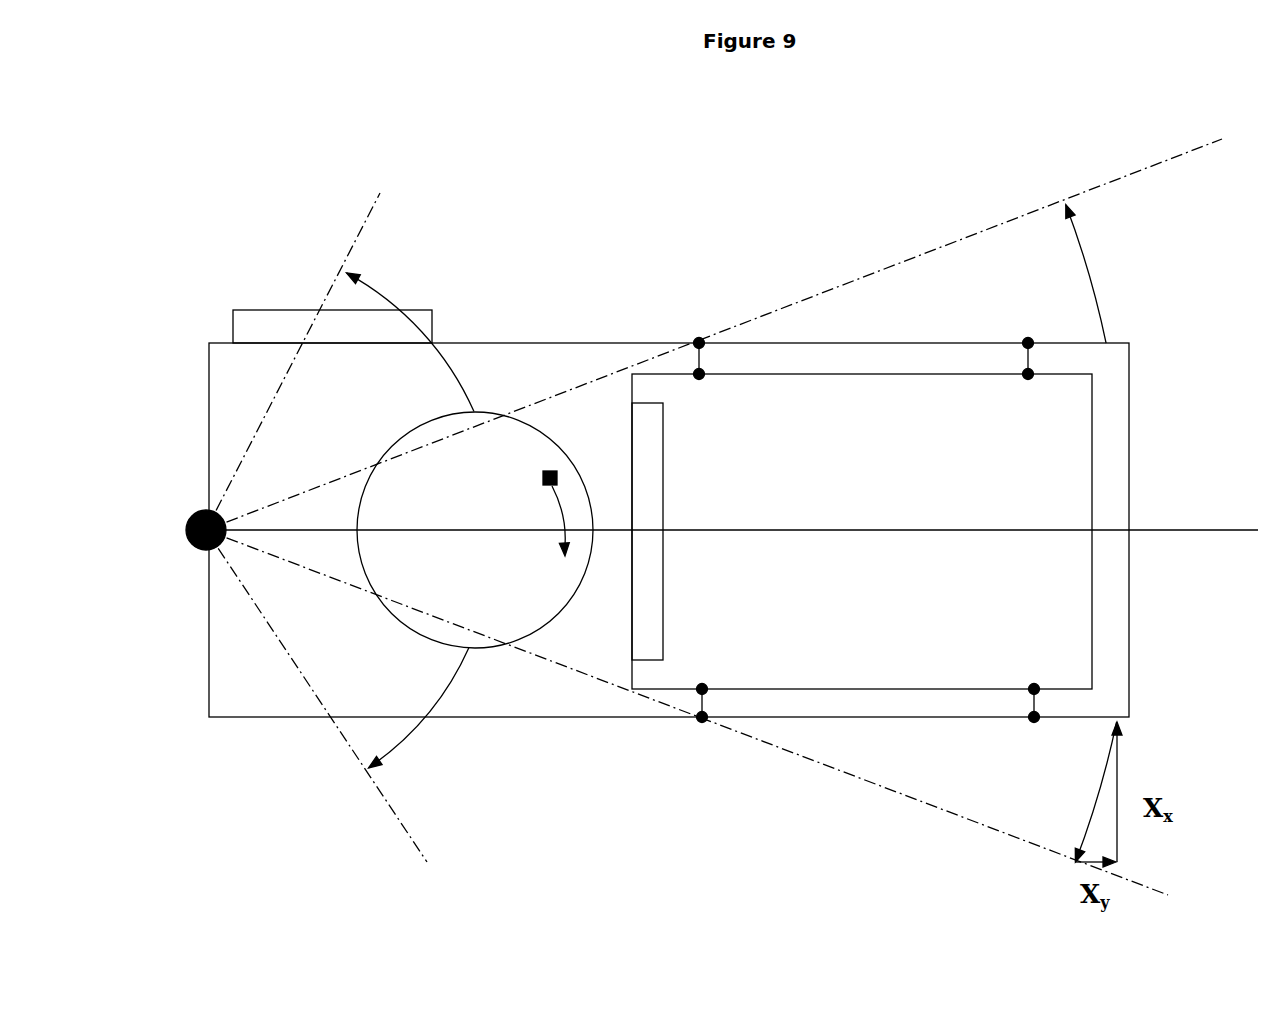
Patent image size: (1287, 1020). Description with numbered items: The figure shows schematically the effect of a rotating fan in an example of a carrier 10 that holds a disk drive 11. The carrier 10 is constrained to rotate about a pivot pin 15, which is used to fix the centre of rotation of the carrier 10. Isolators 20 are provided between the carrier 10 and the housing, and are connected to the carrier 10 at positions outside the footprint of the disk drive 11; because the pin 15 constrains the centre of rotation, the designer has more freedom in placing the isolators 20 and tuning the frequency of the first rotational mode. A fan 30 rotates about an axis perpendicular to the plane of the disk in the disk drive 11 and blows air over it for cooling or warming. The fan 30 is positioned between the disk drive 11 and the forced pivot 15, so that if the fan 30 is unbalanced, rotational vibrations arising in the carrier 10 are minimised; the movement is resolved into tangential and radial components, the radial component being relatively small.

The carrier 10 is at (1136, 371).
The disk drive 11 is at (1103, 463).
The pivot pin 15 is at (198, 495).
The isolators 20 is at (1037, 350).
The fan 30 is at (550, 442).